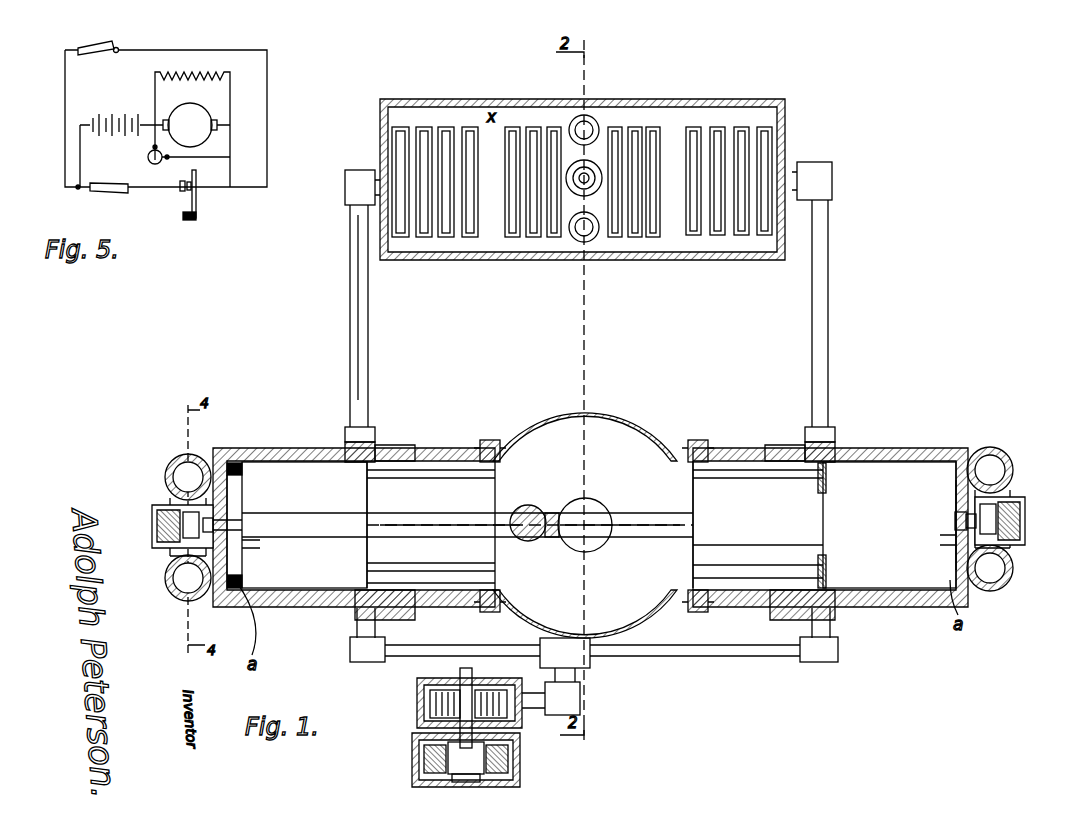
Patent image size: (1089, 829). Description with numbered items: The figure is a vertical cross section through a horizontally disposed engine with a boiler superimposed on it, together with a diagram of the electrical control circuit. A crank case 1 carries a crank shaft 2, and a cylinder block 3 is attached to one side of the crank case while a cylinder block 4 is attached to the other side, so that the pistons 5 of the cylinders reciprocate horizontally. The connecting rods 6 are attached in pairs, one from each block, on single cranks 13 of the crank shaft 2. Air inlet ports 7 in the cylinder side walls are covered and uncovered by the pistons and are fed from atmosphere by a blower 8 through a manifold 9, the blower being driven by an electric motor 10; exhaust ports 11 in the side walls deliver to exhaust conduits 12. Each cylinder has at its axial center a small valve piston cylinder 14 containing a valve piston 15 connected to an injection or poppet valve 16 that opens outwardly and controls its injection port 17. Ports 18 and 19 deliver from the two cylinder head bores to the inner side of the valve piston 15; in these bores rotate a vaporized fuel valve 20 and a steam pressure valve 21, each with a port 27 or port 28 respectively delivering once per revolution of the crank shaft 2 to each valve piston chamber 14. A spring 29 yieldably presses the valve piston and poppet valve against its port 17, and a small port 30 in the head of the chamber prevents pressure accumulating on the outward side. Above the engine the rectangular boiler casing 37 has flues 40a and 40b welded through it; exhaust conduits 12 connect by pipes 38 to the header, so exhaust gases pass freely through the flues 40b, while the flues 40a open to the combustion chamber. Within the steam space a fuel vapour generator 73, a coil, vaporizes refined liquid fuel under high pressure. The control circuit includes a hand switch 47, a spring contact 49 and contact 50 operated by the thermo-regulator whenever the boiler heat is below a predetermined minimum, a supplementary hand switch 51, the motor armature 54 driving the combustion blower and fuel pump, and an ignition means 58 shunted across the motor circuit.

In FIG. 1, the crank case 1 is at (640, 428).
In FIG. 1, the crank shaft 2 is at (604, 546).
In FIG. 1, the cylinder block 3 is at (300, 608).
In FIG. 1, the cylinder block 4 is at (925, 608).
In FIG. 1, the pistons 5 is at (700, 492).
In FIG. 1, the connecting rods 6 is at (600, 513).
In FIG. 1, the air inlet ports 7 is at (395, 618).
In FIG. 1, the blower 8 is at (417, 705).
In FIG. 1, the manifold 9 is at (357, 615).
In FIG. 1, the electric motor 10 is at (412, 778).
In FIG. 1, the exhaust ports 11 is at (365, 465).
In FIG. 1, the exhaust conduits 12 is at (345, 446).
In FIG. 1, the cranks 13 is at (531, 506).
In FIG. 1, the valve piston cylinder 14 is at (165, 548).
In FIG. 1, the valve piston 15 is at (966, 525).
In FIG. 1, the injection valve 16 is at (213, 525).
In FIG. 1, the injection port 17 is at (235, 527).
In FIG. 1, the port 18 is at (232, 500).
In FIG. 1, the port 19 is at (232, 555).
In FIG. 1, the vaporized fuel valve 20 is at (185, 477).
In FIG. 1, the steam pressure valve 21 is at (180, 595).
In FIG. 1, the port 27 is at (172, 488).
In FIG. 1, the port 28 is at (200, 600).
In FIG. 1, the spring 29 is at (165, 510).
In FIG. 1, the port 30 is at (157, 528).
In FIG. 1, the boiler casing 37 is at (724, 261).
In FIG. 1, the pipes 38 is at (369, 397).
In FIG. 1, the flues 40a is at (533, 128).
In FIG. 1, the flues 40b is at (394, 135).
In FIG. 1, the fuel vapour generator 73 is at (575, 190).
In FIG. 5, the hand switch 47 is at (105, 196).
In FIG. 5, the spring contact 49 is at (190, 200).
In FIG. 5, the contact 50 is at (182, 192).
In FIG. 5, the hand switch 51 is at (108, 40).
In FIG. 5, the motor armature 54 is at (192, 125).
In FIG. 5, the ignition means 58 is at (148, 160).